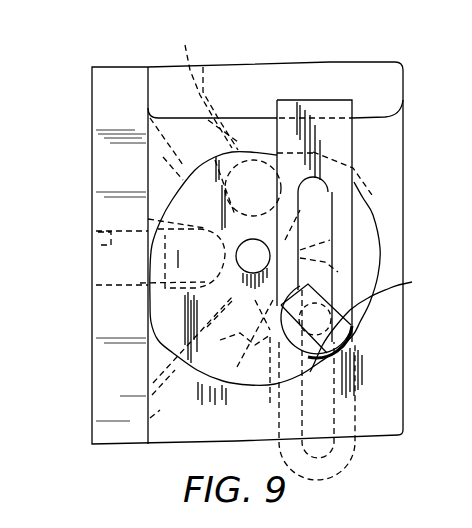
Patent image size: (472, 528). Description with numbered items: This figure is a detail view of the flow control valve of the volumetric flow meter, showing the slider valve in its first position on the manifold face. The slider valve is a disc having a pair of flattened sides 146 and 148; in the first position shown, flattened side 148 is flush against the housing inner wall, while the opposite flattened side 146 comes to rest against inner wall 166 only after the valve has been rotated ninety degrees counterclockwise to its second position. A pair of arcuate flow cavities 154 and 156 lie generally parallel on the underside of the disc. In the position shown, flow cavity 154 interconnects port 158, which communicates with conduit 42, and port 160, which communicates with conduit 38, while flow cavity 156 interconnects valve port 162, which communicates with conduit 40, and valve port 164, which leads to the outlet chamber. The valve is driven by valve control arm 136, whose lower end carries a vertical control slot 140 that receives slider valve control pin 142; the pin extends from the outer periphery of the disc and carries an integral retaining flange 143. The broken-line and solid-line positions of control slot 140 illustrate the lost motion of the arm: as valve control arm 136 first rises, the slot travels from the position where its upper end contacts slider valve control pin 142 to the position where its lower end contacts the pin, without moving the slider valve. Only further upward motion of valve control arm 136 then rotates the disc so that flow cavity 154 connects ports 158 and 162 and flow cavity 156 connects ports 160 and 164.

The conduit 38 is at (205, 88).
The flattened side 146 is at (260, 153).
The inner wall 166 is at (100, 115).
The port 160 is at (185, 173).
The port 158 is at (148, 219).
The conduit 42 is at (100, 245).
The flow cavity 154 is at (200, 267).
The flattened side 148 is at (150, 306).
The conduit 40 is at (148, 422).
The valve control arm 136 is at (354, 138).
The control slot 140 is at (332, 191).
The valve port 164 is at (340, 231).
The flow cavity 156 is at (337, 264).
The retaining flange 143 is at (377, 322).
The slider valve control pin 142 is at (338, 314).
The valve port 162 is at (272, 383).